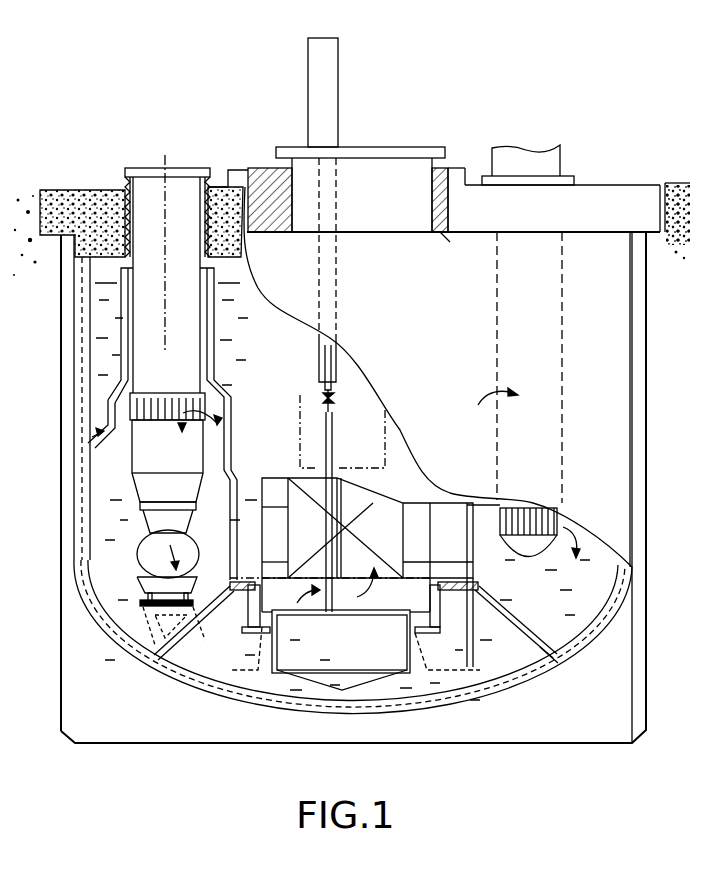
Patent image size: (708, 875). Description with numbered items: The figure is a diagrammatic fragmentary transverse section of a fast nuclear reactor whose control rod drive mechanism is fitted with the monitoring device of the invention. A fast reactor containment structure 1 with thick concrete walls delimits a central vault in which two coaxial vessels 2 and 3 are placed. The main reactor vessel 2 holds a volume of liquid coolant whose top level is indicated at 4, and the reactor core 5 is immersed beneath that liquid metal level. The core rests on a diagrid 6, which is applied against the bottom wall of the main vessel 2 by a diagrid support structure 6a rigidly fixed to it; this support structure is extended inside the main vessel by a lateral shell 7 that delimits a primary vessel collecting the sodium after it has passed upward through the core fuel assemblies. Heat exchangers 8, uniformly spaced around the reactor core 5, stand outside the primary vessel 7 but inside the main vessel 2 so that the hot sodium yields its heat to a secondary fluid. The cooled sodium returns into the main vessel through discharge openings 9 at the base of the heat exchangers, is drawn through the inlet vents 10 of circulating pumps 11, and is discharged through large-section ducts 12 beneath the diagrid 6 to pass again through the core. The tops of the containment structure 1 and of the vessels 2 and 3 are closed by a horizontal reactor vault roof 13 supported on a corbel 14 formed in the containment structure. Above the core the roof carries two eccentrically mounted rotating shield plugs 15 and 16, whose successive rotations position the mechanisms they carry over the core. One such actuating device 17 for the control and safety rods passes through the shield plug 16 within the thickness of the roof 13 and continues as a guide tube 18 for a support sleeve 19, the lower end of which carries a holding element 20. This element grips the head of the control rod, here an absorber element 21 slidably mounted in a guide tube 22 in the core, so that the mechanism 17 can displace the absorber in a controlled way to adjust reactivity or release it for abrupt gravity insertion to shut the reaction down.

The fast reactor containment structure 1 is at (45, 292).
The main reactor vessel 2 is at (497, 694).
The vessel 3 is at (557, 673).
The top level of coolant 4 is at (238, 282).
The reactor core 5 is at (390, 553).
The diagrid 6 is at (477, 592).
The diagrid support structure 6a is at (531, 638).
The lateral shell 7 is at (224, 448).
The heat exchangers 8 is at (562, 345).
The discharge openings 9 is at (543, 507).
The inlet vents 10 is at (118, 430).
The circulating pumps 11 is at (143, 556).
The large-section ducts 12 is at (208, 593).
The reactor vault roof 13 is at (598, 185).
The corbel 14 is at (650, 236).
The rotating shield plug 15 is at (449, 251).
The rotating shield plug 16 is at (392, 180).
The actuating device 17 is at (340, 92).
The guide tube 18 is at (338, 279).
The support sleeve 19 is at (327, 358).
The holding element 20 is at (342, 397).
The absorber element 21 is at (333, 447).
The guide tube 22 is at (330, 556).